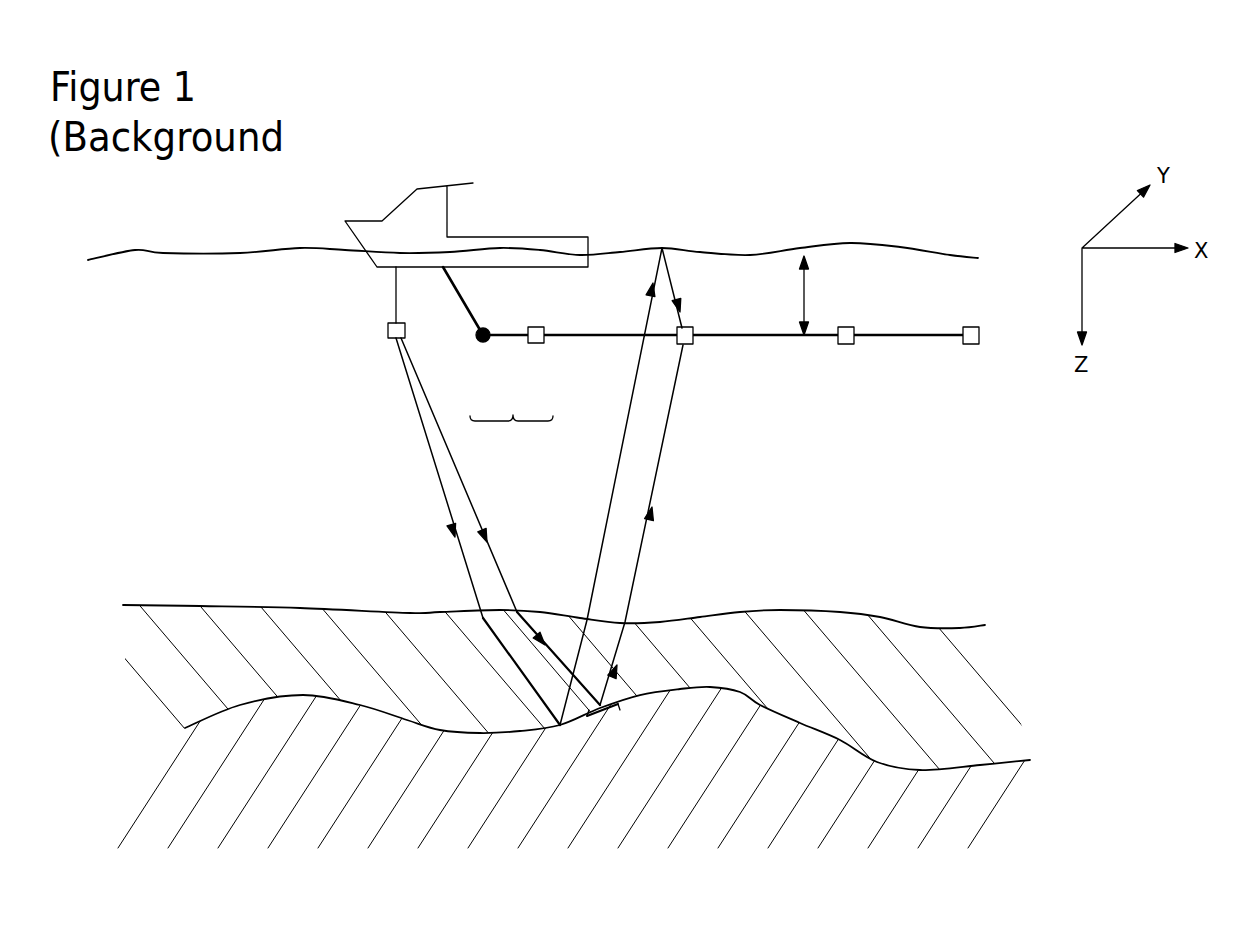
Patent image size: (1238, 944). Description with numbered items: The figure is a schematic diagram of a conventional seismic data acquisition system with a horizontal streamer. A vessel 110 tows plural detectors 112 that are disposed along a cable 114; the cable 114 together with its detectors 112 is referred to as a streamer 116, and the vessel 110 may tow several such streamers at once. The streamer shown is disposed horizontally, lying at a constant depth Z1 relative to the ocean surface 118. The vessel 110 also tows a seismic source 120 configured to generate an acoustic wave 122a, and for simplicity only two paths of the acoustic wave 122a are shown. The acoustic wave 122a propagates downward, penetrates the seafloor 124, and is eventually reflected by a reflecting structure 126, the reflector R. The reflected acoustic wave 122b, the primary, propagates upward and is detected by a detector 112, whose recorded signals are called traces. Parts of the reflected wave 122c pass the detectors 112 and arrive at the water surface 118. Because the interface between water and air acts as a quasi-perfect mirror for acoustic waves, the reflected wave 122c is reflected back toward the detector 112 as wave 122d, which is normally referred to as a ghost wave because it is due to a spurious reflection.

The vessel 110 is at (398, 217).
The detectors 112 is at (535, 343).
The cable 114 is at (513, 340).
The streamer 116 is at (511, 433).
The ocean surface 118 is at (706, 248).
The seismic source 120 is at (388, 330).
The acoustic wave 122a is at (455, 472).
The reflected acoustic wave 122b is at (643, 557).
The reflected wave 122c is at (615, 500).
The ghost wave 122d is at (675, 285).
The seafloor 124 is at (840, 610).
The reflecting structure 126 is at (877, 762).
The constant depth Z1 is at (808, 291).
The reflector R is at (590, 717).